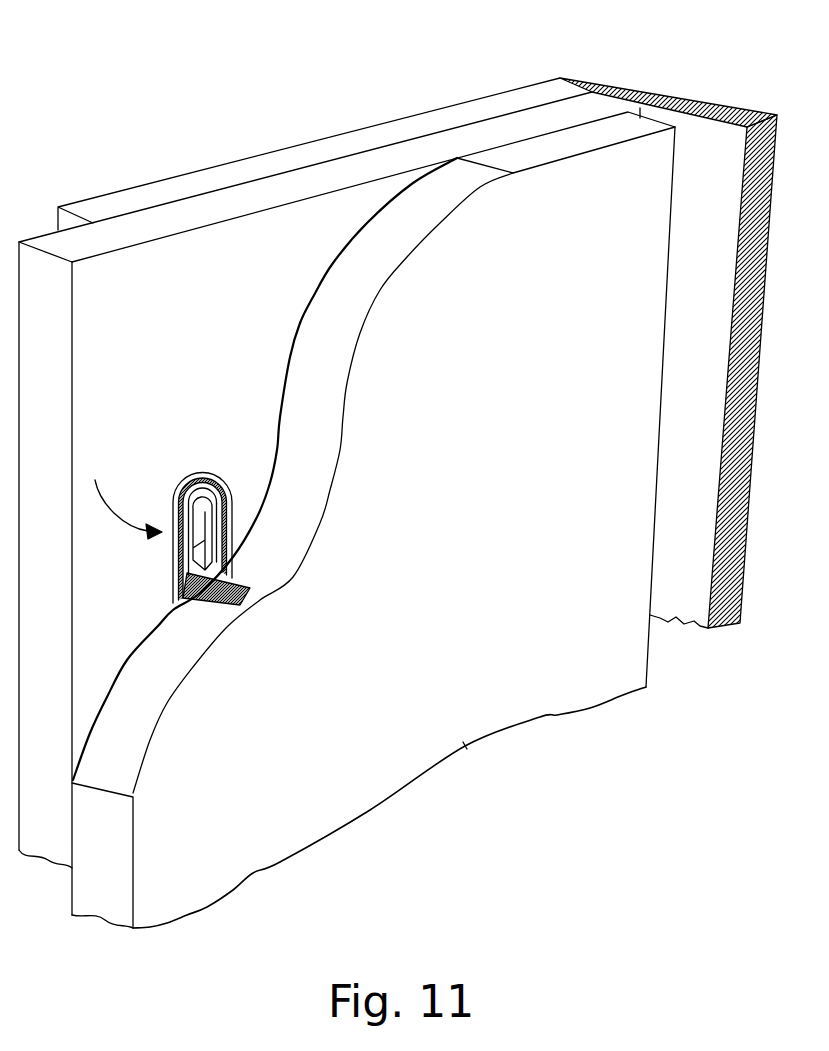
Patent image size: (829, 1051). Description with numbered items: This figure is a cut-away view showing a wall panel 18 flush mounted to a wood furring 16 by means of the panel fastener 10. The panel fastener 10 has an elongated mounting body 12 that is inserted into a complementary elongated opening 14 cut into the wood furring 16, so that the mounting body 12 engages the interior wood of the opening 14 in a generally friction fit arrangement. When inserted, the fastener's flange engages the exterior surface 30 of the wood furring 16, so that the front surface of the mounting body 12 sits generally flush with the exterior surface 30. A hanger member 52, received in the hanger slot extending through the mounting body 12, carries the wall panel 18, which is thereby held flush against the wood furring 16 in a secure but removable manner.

The panel fastener 10 is at (302, 518).
The elongated mounting body 12 is at (215, 521).
The complementary elongated opening 14 is at (197, 473).
The wood furring 16 is at (103, 573).
The wall panel 18 is at (558, 152).
The exterior surface 30 is at (123, 495).
The hanger member 52 is at (250, 585).